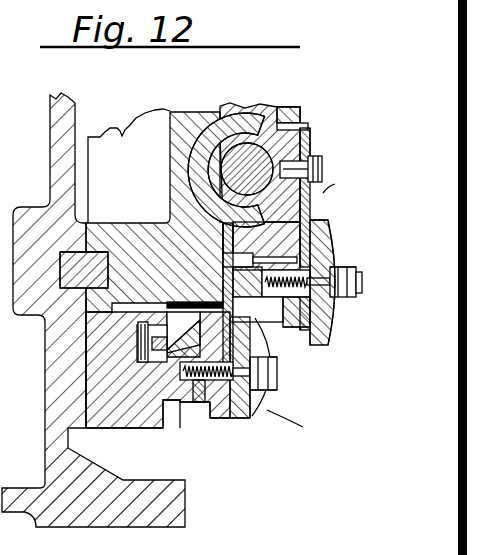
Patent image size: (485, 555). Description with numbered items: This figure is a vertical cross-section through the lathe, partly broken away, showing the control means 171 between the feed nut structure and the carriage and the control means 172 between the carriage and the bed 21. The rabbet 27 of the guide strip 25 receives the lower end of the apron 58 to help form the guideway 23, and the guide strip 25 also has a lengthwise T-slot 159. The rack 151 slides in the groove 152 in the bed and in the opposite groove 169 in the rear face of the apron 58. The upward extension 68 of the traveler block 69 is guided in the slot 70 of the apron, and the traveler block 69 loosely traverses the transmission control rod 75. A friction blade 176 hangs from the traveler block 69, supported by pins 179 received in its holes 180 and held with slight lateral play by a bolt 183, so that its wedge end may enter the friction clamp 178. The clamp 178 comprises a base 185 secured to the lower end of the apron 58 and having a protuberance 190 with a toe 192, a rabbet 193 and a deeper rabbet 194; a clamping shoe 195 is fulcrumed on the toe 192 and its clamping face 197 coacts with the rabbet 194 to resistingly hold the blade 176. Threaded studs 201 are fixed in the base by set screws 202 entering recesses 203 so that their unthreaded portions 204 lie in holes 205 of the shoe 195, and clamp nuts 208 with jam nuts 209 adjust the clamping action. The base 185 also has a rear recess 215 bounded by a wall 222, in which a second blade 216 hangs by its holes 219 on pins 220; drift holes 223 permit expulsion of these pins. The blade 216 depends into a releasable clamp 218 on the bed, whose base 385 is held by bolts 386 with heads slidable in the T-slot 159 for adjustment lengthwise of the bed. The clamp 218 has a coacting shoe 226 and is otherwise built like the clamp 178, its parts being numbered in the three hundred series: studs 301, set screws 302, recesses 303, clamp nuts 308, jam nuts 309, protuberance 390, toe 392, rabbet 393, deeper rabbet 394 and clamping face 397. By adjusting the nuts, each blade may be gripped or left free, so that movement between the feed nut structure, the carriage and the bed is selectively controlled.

The bed 21 is at (52, 462).
The guideway 23 is at (44, 406).
The guide strip 25 is at (122, 427).
The rabbet 27 is at (86, 362).
The apron 58 is at (122, 135).
The upward extension 68 is at (268, 107).
The traveler block 69 is at (306, 133).
The slot 70 is at (281, 111).
The transmission control rod 75 is at (228, 173).
The rack 151 is at (100, 252).
The groove 152 is at (96, 250).
The T-slot 159 is at (150, 366).
The groove 169 is at (139, 232).
The control means 171 is at (324, 198).
The control means 172 is at (282, 393).
The friction blade 176 is at (310, 199).
The friction clamp 178 is at (330, 241).
The pins 179 is at (318, 170).
The holes 180 is at (311, 150).
The bolt 183 is at (322, 162).
The base 185 is at (277, 303).
The protuberance 190 is at (287, 327).
The toe 192 is at (308, 330).
The rabbet 193 is at (318, 345).
The deeper rabbet 194 is at (285, 226).
The clamping shoe 195 is at (328, 231).
The clamping face 197 is at (300, 239).
The threaded studs 201 is at (356, 289).
The set screws 202 is at (285, 327).
The recesses 203 is at (262, 276).
The unthreaded portions 204 is at (303, 275).
The holes 205 is at (328, 326).
The clamp nuts 208 is at (340, 266).
The jam nuts 209 is at (358, 272).
The rear recess 215 is at (250, 247).
The blade 216 is at (226, 291).
The releasable clamp 218 is at (268, 405).
The holes 219 is at (225, 258).
The pins 220 is at (230, 246).
The wall 222 is at (226, 273).
The drift holes 223 is at (296, 258).
The shoe 226 is at (254, 417).
The threaded studs 301 is at (279, 382).
The set screws 302 is at (213, 405).
The recesses 303 is at (175, 386).
The clamp nuts 308 is at (299, 423).
The jam nuts 309 is at (278, 368).
The base 385 is at (168, 428).
The bolts 386 is at (147, 312).
The protuberance 390 is at (199, 403).
The toe 392 is at (230, 419).
The rabbet 393 is at (246, 419).
The deeper rabbet 394 is at (187, 334).
The clamping face 397 is at (272, 350).